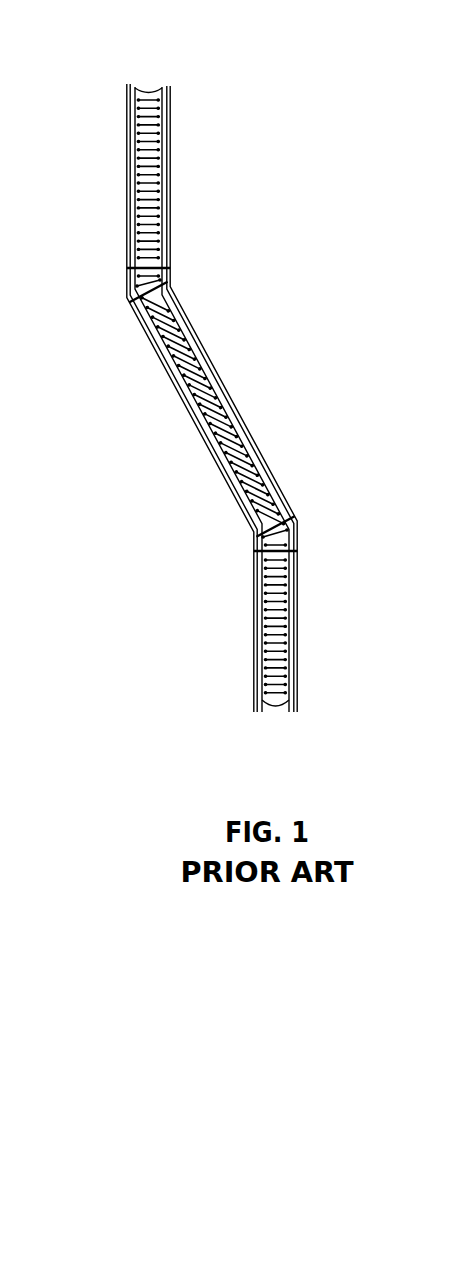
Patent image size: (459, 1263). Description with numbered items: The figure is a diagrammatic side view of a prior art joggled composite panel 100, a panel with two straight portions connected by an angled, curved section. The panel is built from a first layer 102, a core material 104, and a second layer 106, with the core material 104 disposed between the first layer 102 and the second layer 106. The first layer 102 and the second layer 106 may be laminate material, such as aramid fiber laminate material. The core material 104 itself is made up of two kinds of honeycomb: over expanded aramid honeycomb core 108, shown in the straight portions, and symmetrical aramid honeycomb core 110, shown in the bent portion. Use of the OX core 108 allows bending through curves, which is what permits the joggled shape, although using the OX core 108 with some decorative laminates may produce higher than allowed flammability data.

The joggled composite panel 100 is at (143, 53).
The first layer 102 is at (126, 178).
The core material 104 is at (276, 709).
The second layer 106 is at (227, 390).
The over expanded aramid honeycomb core 108 is at (152, 170).
The symmetrical aramid honeycomb core 110 is at (210, 407).